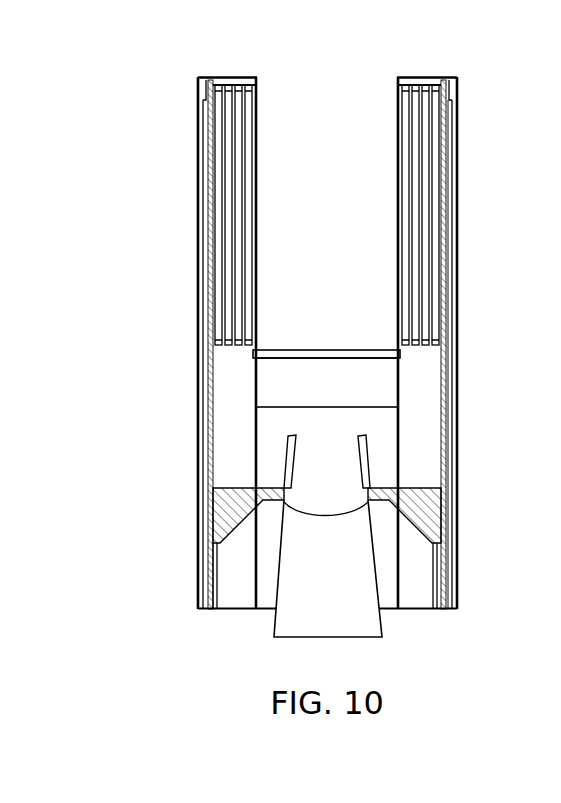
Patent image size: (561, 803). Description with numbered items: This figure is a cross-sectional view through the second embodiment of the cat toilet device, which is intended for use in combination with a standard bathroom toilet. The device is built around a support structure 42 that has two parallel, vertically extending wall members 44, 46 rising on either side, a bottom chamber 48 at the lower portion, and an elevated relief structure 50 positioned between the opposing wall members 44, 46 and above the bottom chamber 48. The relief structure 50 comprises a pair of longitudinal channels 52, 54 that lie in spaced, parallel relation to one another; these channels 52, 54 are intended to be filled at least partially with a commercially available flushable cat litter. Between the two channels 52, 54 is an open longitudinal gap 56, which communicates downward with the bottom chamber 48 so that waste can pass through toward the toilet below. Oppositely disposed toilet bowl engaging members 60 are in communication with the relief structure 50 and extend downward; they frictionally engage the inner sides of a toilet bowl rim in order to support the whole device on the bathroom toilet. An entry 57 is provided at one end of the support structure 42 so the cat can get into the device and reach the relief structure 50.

The support structure 42 is at (473, 231).
The wall member 44 is at (198, 113).
The wall member 46 is at (458, 120).
The bottom chamber 48 is at (242, 578).
The relief structure 50 is at (384, 445).
The longitudinal channel 52 is at (236, 487).
The longitudinal channel 54 is at (418, 487).
The longitudinal gap 56 is at (317, 458).
The entry 57 is at (317, 209).
The toilet bowl engaging member 60 is at (362, 582).